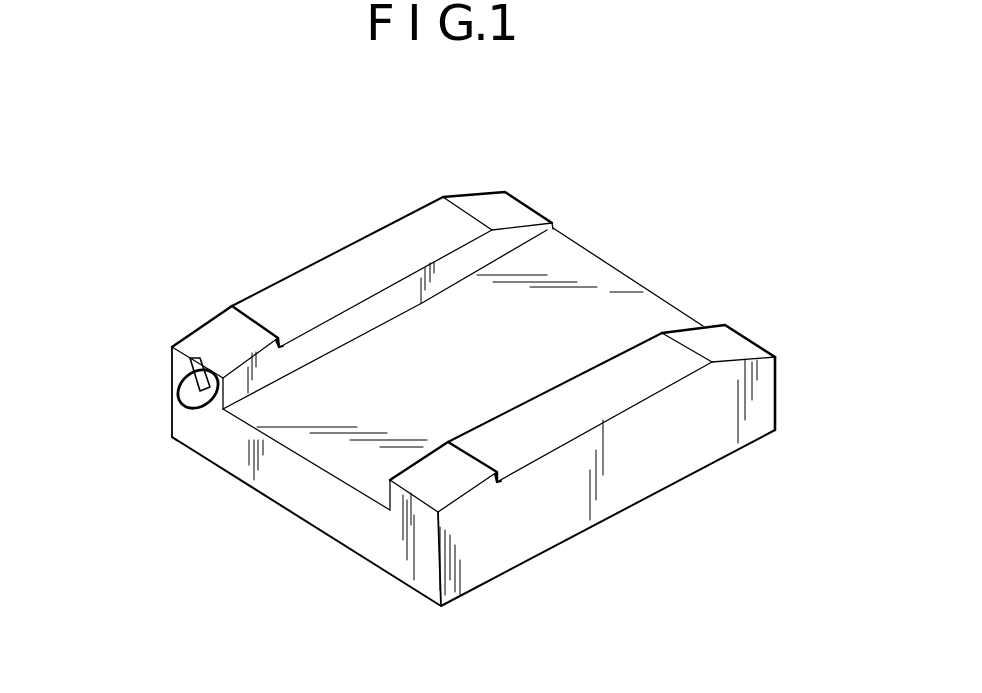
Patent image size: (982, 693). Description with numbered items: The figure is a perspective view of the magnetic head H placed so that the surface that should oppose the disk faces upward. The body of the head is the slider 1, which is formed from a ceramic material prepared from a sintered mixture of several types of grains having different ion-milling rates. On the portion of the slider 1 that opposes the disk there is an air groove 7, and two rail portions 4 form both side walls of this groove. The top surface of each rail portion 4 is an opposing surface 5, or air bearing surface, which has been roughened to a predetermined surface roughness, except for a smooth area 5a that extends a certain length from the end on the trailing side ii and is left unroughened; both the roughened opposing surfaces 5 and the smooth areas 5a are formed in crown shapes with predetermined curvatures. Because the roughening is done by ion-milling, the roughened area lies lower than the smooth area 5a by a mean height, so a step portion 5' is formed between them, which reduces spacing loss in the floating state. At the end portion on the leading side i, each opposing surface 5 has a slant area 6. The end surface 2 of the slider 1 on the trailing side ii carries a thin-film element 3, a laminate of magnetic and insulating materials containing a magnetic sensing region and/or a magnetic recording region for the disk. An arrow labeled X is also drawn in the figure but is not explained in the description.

The slider 1 is at (258, 500).
The end surface 2 is at (228, 463).
The thin-film element 3 is at (176, 390).
The rail portion 4 is at (315, 255).
The opposing surface 5 is at (505, 347).
The step portion 5' is at (428, 413).
The smooth area 5a is at (212, 338).
The slant area 6 is at (491, 207).
The air groove 7 is at (602, 293).
The leading side i is at (588, 240).
The trailing side ii is at (347, 518).
The direction X is at (684, 240).
The magnetic head H is at (690, 302).